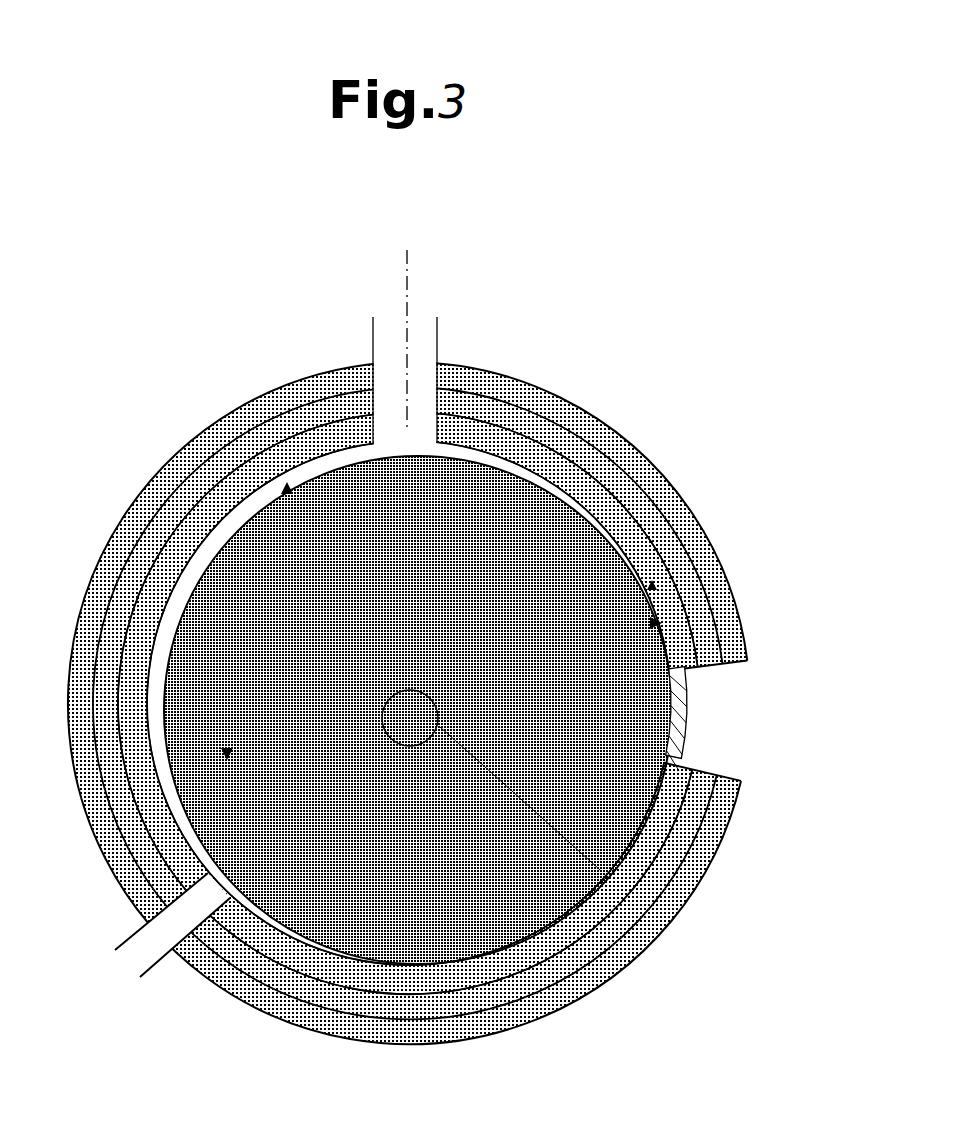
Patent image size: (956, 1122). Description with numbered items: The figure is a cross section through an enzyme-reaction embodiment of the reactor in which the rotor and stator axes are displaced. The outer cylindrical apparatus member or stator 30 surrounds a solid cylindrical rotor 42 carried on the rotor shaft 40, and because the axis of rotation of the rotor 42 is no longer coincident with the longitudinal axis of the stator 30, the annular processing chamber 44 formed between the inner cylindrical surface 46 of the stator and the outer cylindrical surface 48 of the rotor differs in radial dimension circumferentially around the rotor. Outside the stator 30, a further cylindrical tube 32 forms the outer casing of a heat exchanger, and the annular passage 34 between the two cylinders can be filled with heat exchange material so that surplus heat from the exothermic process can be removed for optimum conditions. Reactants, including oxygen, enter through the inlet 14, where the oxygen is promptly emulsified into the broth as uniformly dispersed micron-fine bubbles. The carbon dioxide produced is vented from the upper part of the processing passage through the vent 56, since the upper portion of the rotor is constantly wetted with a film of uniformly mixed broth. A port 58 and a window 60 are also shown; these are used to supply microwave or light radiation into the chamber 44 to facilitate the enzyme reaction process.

The inlet 14 is at (103, 974).
The outer cylindrical apparatus member 30 is at (137, 667).
The cylindrical tube 32 is at (712, 530).
The annular passage 34 is at (223, 460).
The rotor shaft 40 is at (605, 873).
The rotor 42 is at (193, 540).
The processing chamber 44 is at (572, 500).
The inner cylindrical surface 46 is at (640, 530).
The outer cylindrical surface 48 is at (487, 477).
The vent 56 is at (427, 348).
The port 58 is at (758, 692).
The window 60 is at (697, 737).